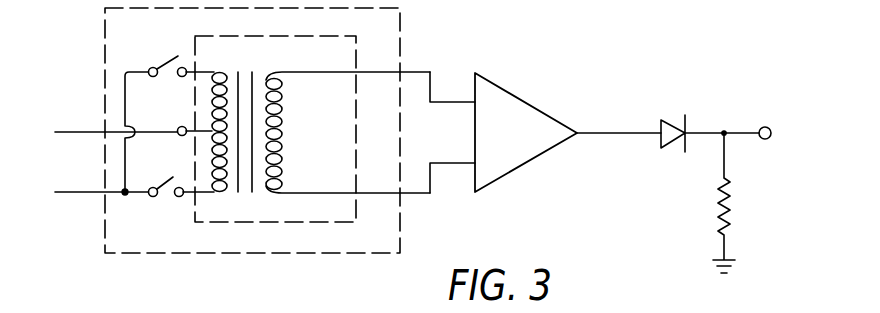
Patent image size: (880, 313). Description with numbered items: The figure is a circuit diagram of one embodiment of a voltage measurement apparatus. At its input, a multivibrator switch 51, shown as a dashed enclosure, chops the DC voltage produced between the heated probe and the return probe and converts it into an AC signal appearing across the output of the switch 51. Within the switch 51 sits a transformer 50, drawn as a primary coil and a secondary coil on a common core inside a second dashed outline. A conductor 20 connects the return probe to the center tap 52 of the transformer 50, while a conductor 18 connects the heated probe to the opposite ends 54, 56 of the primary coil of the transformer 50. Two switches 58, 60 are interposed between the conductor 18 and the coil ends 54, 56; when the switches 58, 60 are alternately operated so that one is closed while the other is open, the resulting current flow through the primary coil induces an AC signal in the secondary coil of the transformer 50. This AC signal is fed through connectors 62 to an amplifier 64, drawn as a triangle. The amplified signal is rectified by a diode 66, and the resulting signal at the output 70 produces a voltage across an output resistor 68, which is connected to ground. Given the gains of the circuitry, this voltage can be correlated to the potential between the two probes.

The conductor 18 is at (65, 197).
The conductor 20 is at (71, 131).
The transformer 50 is at (356, 58).
The multivibrator switch 51 is at (400, 10).
The center tap 52 is at (180, 137).
The end of primary coil 54 is at (182, 78).
The end of primary coil 56 is at (178, 198).
The switch 58 is at (160, 57).
The switch 60 is at (162, 179).
The connectors 62 is at (452, 104).
The amplifier 64 is at (532, 162).
The diode 66 is at (671, 150).
The output resistor 68 is at (731, 200).
The output 70 is at (765, 140).